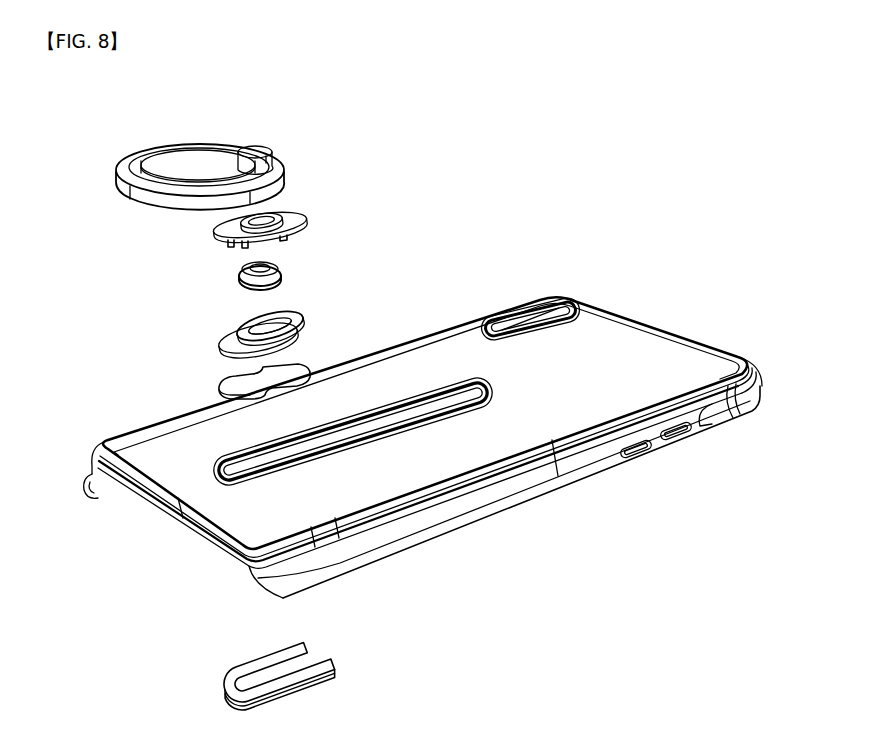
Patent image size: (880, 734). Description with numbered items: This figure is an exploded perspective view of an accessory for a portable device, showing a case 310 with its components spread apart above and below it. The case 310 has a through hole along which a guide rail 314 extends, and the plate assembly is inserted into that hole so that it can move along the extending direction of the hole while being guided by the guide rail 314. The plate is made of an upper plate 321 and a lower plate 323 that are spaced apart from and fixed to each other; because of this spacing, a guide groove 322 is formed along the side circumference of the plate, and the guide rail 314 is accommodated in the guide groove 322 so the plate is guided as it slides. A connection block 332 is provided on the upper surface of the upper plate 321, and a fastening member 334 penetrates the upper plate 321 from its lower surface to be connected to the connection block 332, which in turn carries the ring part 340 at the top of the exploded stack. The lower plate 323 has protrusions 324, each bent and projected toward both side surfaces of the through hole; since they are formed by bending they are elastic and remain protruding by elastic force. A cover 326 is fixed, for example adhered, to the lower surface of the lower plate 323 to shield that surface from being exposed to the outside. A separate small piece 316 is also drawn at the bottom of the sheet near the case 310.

The case 310 is at (657, 348).
The guide rail 314 is at (393, 397).
The clip 316 is at (330, 663).
The upper plate 321 is at (290, 218).
The guide groove 322 is at (273, 236).
The lower plate 323 is at (240, 325).
The protrusions 324 is at (287, 346).
The cover 326 is at (227, 388).
The connection block 332 is at (265, 148).
The fastening member 334 is at (240, 278).
The ring part 340 is at (127, 163).